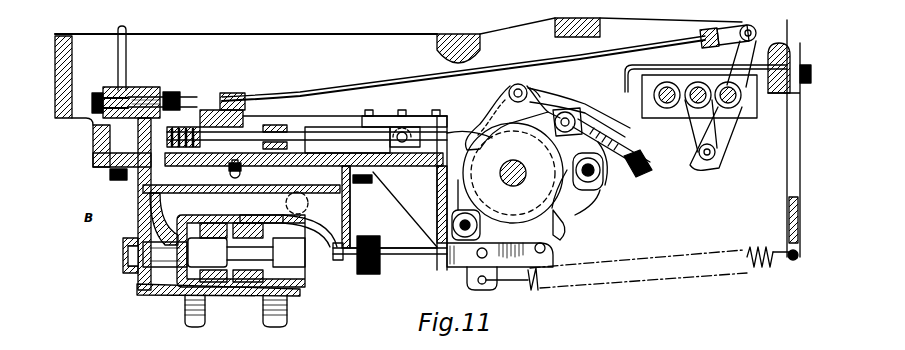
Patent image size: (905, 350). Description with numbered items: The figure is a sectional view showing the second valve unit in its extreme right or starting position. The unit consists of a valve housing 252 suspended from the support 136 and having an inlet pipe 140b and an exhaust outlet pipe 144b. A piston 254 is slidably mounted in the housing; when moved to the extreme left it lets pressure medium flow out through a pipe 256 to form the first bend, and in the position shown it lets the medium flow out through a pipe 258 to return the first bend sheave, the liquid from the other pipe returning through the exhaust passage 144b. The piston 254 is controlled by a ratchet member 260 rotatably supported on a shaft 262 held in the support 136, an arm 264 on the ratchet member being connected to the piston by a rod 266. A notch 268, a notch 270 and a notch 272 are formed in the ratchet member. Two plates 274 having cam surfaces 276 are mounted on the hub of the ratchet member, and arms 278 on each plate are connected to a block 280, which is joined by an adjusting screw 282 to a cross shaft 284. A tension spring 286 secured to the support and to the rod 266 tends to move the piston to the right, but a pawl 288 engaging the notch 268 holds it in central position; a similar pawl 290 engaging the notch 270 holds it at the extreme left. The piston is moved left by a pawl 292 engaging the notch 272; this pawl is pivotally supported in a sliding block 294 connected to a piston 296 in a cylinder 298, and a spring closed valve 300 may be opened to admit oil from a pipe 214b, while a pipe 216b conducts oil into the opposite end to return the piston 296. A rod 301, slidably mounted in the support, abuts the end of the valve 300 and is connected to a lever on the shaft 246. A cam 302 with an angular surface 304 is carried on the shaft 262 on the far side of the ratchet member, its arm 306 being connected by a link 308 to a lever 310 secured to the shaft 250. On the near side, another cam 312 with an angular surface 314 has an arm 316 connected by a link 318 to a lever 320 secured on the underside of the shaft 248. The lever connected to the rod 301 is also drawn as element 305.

The support 136 is at (82, 116).
The pipe 214b is at (117, 48).
The spring closed valve 300 is at (133, 90).
The cylinder 298 is at (194, 125).
The piston 296 is at (206, 126).
The rod 301 is at (307, 98).
The shaft 250 is at (672, 87).
The link 305 is at (744, 50).
The link 318 is at (623, 90).
The shaft 246 is at (733, 100).
The shaft 248 is at (707, 105).
The lever 310 is at (706, 161).
The lever 320 is at (722, 160).
The tension spring 286 is at (757, 247).
The cam surfaces 276 is at (518, 160).
The shaft 262 is at (518, 185).
The notch 272 is at (498, 124).
The arm 306 is at (516, 84).
The arm 316 is at (531, 87).
The block 280 is at (553, 100).
The plates 274 is at (560, 133).
The arms 278 is at (574, 112).
The link 308 is at (648, 163).
The adjusting screw 282 is at (626, 180).
The cross shaft 284 is at (600, 190).
The ratchet member 260 is at (578, 204).
The pawl 290 is at (602, 205).
The notch 270 is at (573, 220).
The angular surface 314 is at (468, 143).
The arm 264 is at (514, 258).
The cam 312 is at (553, 222).
The sliding block 294 is at (387, 127).
The angular surface 304 is at (392, 146).
The cam 302 is at (468, 133).
The pawl 292 is at (447, 127).
The pawl 288 is at (440, 203).
The notch 268 is at (444, 178).
The rod 266 is at (417, 260).
The pipe 216b is at (228, 178).
The exhaust outlet pipe 144b is at (293, 197).
The inlet pipe 140b is at (232, 240).
The pipe 256 is at (187, 313).
The pipe 258 is at (265, 313).
The valve housing 252 is at (156, 293).
The piston 254 is at (304, 272).